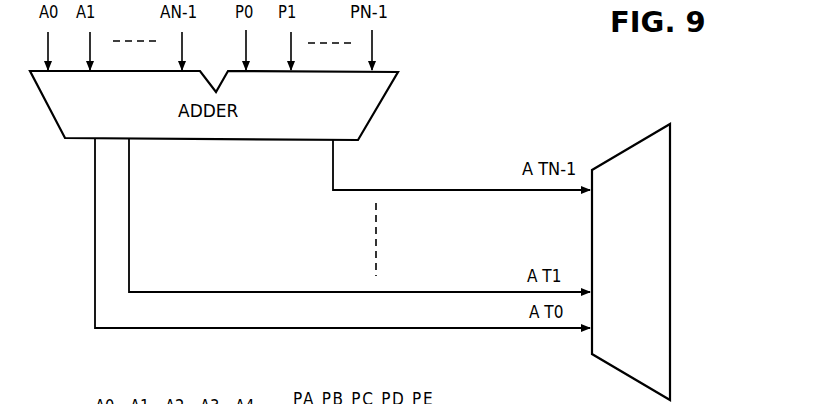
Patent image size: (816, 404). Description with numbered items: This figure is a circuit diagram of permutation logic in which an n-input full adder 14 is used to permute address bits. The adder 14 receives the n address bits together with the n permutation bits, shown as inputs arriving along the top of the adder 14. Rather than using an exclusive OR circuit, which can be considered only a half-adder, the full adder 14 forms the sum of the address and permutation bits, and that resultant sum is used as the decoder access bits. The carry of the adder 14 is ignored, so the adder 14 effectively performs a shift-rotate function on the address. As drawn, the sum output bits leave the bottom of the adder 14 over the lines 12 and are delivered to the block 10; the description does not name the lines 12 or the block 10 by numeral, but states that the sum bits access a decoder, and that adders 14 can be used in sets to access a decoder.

The adder 14 is at (388, 96).
The adder output lines 12 is at (333, 172).
The multiplexer block 10 is at (628, 146).